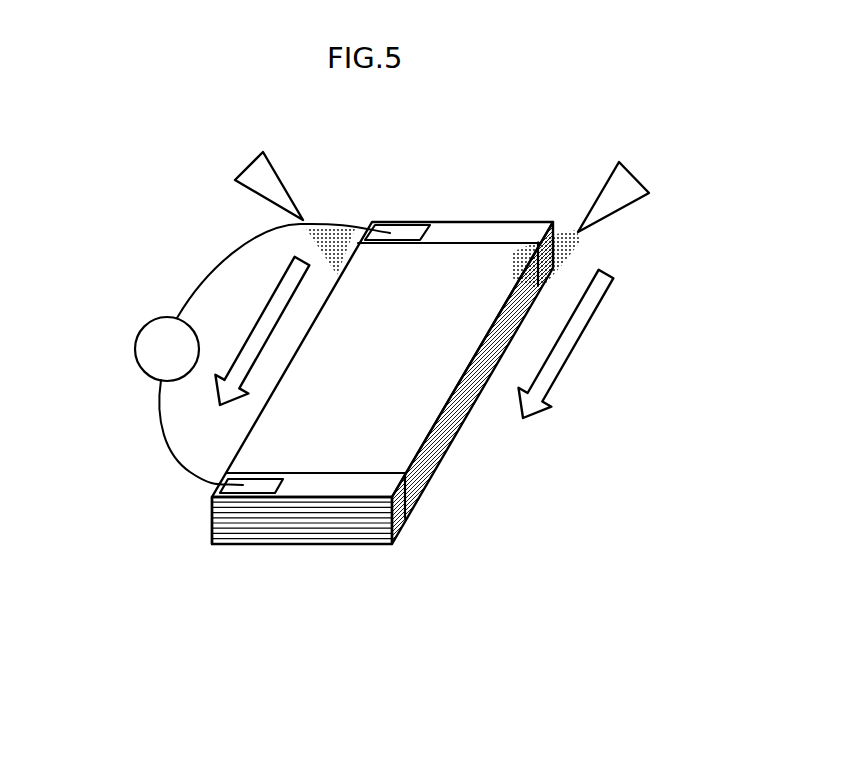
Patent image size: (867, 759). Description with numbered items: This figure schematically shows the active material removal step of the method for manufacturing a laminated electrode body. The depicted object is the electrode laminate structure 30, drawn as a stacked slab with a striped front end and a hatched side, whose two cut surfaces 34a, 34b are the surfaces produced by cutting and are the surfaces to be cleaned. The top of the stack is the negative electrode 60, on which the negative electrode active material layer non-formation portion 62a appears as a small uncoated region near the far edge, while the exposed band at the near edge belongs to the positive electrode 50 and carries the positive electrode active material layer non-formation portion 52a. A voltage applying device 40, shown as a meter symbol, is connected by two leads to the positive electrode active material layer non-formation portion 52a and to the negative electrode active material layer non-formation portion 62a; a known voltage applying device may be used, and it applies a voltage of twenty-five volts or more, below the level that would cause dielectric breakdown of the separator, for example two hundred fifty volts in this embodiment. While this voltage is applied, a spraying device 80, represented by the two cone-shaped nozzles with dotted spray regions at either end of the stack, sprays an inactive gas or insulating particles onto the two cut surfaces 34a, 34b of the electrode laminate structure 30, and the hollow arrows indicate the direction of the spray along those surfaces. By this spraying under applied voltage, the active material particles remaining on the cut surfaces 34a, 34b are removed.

The electrode laminate structure 30 is at (290, 532).
The cut surface 34a is at (212, 520).
The cut surface 34b is at (420, 490).
The voltage applying device 40 is at (135, 340).
The positive electrode 50 is at (347, 551).
The positive electrode active material layer non-formation portion 52a is at (251, 486).
The negative electrode 60 is at (396, 319).
The negative electrode active material layer non-formation portion 62a is at (397, 232).
The spraying device 80 is at (248, 170).